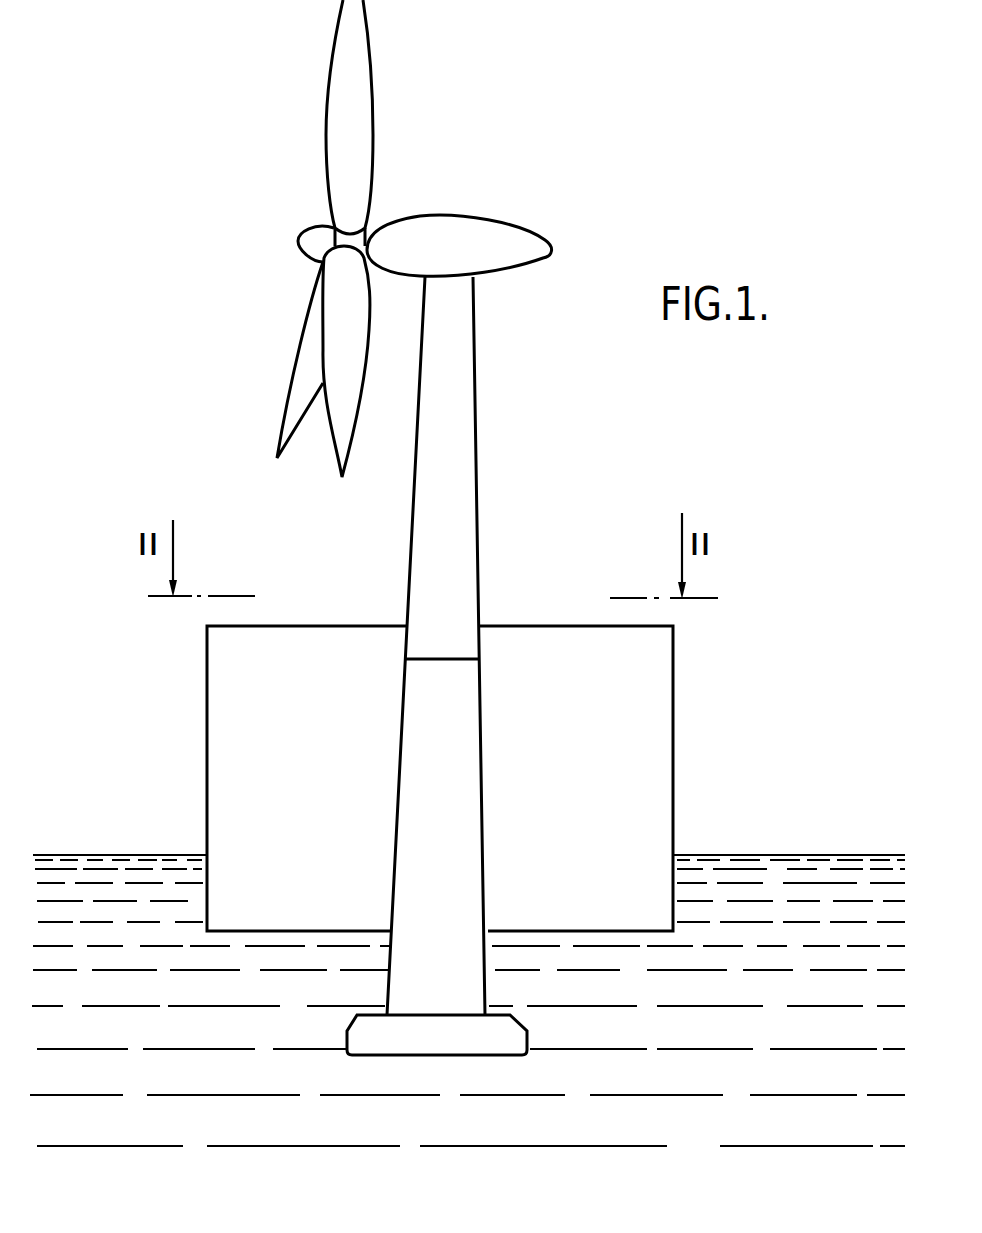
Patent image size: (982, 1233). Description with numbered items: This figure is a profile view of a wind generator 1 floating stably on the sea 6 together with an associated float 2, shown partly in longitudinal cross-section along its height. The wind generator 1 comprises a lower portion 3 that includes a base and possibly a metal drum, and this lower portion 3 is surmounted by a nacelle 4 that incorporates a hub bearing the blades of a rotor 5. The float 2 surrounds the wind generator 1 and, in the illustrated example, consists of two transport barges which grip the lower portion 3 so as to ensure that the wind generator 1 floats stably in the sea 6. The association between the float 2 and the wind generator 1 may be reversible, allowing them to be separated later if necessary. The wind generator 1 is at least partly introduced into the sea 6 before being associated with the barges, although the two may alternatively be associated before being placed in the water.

The wind generator 1 is at (510, 502).
The float 2 is at (633, 677).
The lower portion 3 is at (458, 788).
The nacelle 4 is at (515, 243).
The rotor 5 is at (300, 352).
The sea 6 is at (787, 915).